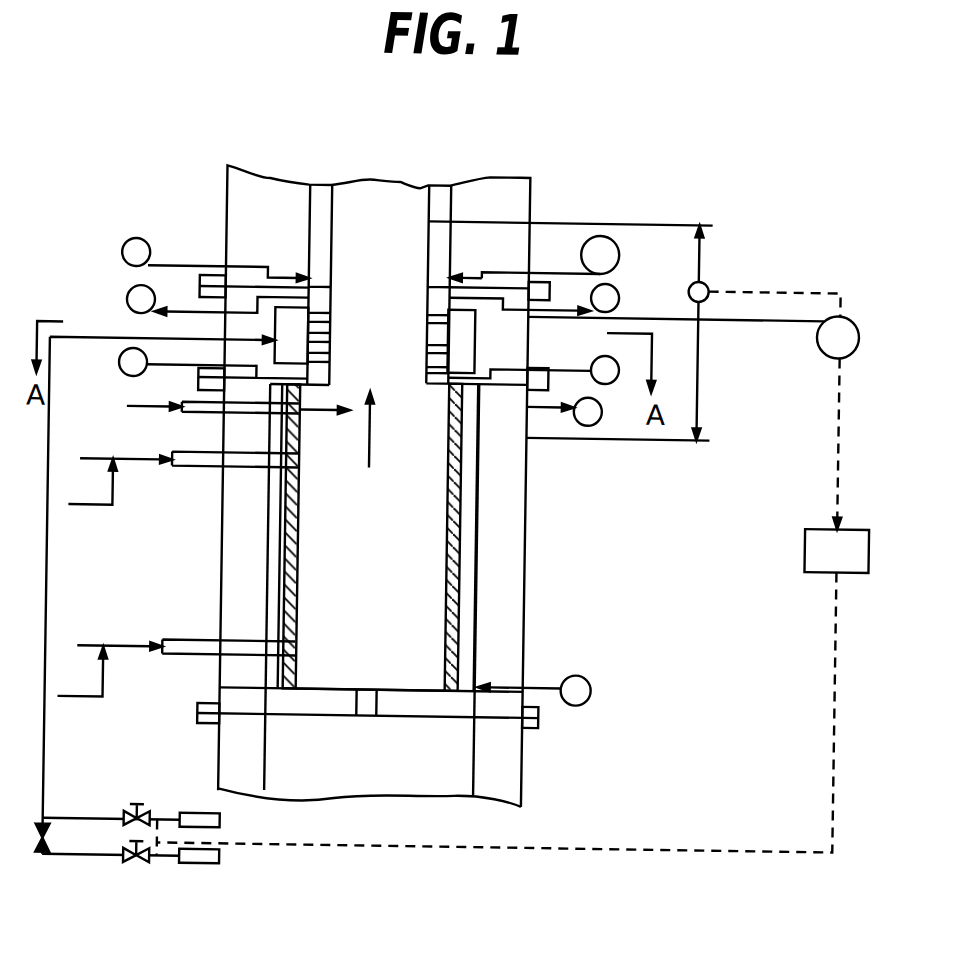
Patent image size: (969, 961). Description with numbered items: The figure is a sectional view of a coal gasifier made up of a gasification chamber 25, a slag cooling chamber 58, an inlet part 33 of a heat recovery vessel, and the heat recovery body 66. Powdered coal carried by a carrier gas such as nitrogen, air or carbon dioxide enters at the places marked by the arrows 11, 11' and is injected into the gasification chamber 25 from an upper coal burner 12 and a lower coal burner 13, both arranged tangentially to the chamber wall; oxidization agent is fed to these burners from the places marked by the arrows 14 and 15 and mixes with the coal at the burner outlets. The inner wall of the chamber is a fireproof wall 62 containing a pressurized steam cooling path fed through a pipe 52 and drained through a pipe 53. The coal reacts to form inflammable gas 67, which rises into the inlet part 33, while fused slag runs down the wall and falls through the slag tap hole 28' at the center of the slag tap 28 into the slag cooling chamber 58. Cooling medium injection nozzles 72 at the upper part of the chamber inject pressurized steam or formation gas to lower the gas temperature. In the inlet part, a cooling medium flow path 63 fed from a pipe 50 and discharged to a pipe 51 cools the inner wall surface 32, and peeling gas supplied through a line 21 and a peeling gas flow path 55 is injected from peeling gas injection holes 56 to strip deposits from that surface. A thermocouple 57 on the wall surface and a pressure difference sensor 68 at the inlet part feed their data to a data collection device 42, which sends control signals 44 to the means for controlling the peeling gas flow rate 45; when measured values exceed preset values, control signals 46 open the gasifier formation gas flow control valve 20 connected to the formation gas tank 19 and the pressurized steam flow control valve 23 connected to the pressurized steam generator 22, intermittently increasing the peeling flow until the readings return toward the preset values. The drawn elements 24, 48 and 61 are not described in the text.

The carrier gas feed arrow 11 is at (114, 479).
The carrier gas feed arrow 11' is at (112, 617).
The coal burner 12 is at (186, 473).
The coal burner 13 is at (185, 645).
The oxidization agent feed arrow 14 is at (89, 509).
The oxidization agent feed arrow 15 is at (82, 701).
The gasifier formation gas tank 19 is at (226, 828).
The gasifier formation gas flow control valve 20 is at (128, 821).
The line 21 is at (116, 342).
The pressurized steam generator 22 is at (226, 865).
The pressurized steam flow control valve 23 is at (139, 871).
The check valve 24 is at (53, 843).
The gasification chamber 25 is at (435, 535).
The slag tap 28 is at (367, 736).
The slag tap hole 28' is at (341, 732).
The inner wall surface of inlet part of heat recovery vessel 32 is at (328, 369).
The inlet part of heat recovery vessel 33 is at (527, 341).
The data collection device 42 is at (854, 318).
The control signals 44 is at (840, 426).
The means for controlling the peeling gas flow rate 45 is at (810, 551).
The control signals 46 is at (592, 849).
The coolant inlet 48 is at (137, 242).
The pipe 50 is at (130, 375).
The pipe 51 is at (127, 296).
The pipe 52 is at (597, 688).
The pipe 53 is at (601, 414).
The peeling gas flow path 55 is at (474, 324).
The peeling gas injection holes 56 is at (329, 314).
The thermocouple 57 is at (765, 313).
The slag cooling chamber 58 is at (455, 764).
The liner 61 is at (466, 659).
The fireproof wall 62 is at (459, 616).
The cooling medium flow path 63 is at (431, 304).
The heat recovery body 66 is at (529, 192).
The inflammable gas 67 is at (370, 446).
The pressure difference sensor 68 is at (703, 283).
The cooling medium injection nozzles 72 is at (200, 417).